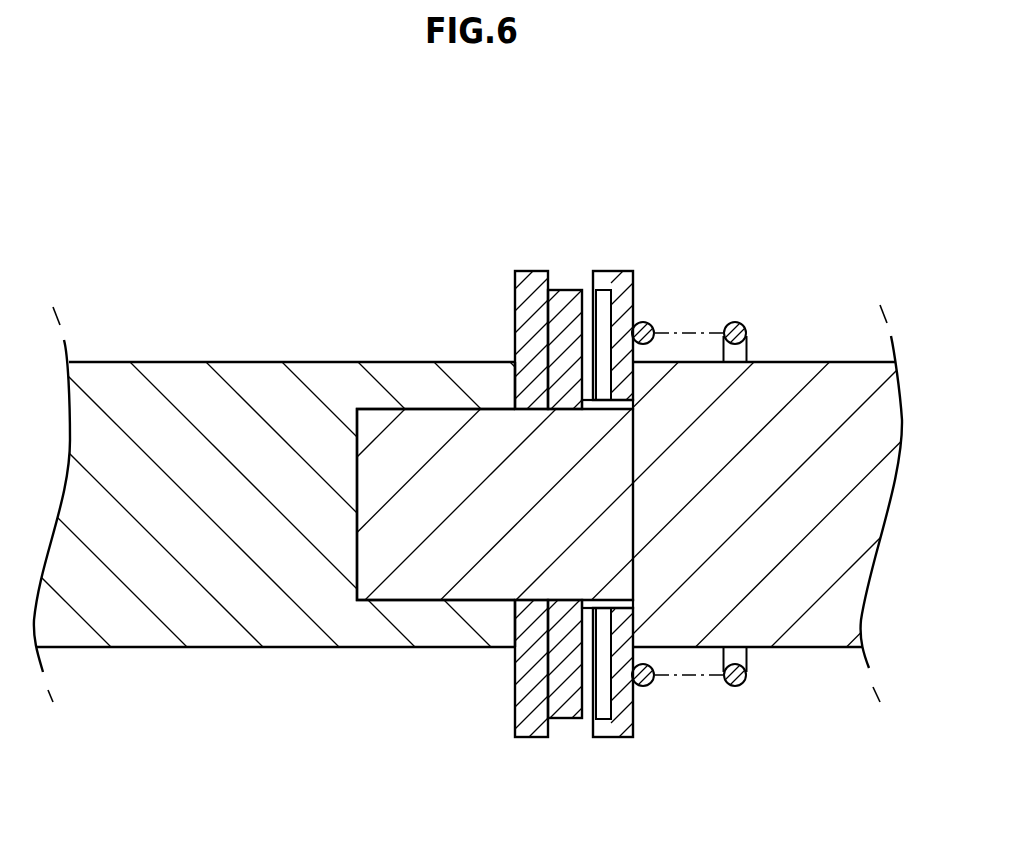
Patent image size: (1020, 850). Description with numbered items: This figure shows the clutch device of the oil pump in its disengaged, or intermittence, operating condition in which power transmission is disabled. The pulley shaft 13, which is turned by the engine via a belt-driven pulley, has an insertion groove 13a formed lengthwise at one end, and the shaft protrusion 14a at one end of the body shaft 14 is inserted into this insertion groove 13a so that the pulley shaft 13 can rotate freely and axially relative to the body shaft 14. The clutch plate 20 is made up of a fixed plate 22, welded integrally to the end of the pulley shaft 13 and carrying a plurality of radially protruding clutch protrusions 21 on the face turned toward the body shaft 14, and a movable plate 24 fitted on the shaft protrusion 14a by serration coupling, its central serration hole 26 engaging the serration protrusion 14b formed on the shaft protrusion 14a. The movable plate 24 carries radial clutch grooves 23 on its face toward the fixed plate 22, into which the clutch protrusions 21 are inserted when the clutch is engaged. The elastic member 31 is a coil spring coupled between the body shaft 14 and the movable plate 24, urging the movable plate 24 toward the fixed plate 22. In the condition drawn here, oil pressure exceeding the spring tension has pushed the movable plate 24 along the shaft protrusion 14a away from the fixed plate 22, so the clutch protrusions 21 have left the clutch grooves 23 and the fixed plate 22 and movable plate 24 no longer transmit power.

The pulley shaft 13 is at (178, 370).
The insertion groove 13a is at (432, 596).
The body shaft 14 is at (802, 368).
The shaft protrusion 14a is at (387, 449).
The serration protrusion 14b is at (603, 608).
The serration hole 26 is at (598, 607).
The clutch plate 20 is at (567, 448).
The clutch protrusions 21 is at (563, 332).
The fixed plate 22 is at (528, 292).
The clutch grooves 23 is at (611, 302).
The movable plate 24 is at (628, 287).
The elastic member 31 is at (733, 330).